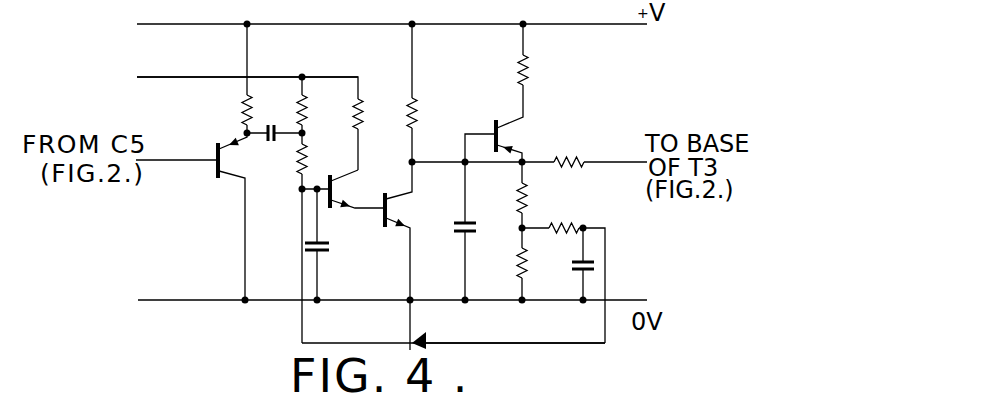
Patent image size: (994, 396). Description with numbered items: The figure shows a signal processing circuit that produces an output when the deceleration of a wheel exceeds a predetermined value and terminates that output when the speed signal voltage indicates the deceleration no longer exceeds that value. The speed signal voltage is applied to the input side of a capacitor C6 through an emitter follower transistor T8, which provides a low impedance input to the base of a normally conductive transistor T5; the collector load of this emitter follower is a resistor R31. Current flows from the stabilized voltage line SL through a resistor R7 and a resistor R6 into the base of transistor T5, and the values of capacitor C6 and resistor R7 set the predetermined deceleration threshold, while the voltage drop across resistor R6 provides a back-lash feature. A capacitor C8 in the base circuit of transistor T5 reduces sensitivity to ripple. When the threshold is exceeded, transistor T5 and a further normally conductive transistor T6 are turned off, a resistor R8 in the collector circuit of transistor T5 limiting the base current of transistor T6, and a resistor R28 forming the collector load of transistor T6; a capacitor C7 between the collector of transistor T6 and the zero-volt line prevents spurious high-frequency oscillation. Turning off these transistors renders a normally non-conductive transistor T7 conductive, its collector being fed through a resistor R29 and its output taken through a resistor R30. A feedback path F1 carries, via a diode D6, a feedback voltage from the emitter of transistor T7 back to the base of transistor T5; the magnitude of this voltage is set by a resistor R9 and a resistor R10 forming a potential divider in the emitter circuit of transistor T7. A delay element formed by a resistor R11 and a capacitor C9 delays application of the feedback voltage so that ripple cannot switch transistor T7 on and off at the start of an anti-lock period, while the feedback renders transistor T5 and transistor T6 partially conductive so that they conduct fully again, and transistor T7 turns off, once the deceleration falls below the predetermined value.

The stabilized voltage line SL is at (150, 77).
The resistor R31 is at (223, 110).
The capacitor C6 is at (272, 125).
The resistor R7 is at (317, 110).
The resistor R6 is at (305, 168).
The resistor R8 is at (375, 133).
The resistor R28 is at (436, 113).
The resistor R29 is at (547, 70).
The resistor R30 is at (562, 160).
The resistor R9 is at (539, 198).
The resistor R11 is at (568, 226).
The resistor R10 is at (498, 263).
The capacitor C8 is at (329, 245).
The capacitor C7 is at (490, 219).
The capacitor C9 is at (574, 264).
The emitter follower transistor T8 is at (239, 161).
The transistor T5 is at (340, 187).
The transistor T6 is at (396, 208).
The transistor T7 is at (500, 133).
The diode D6 is at (420, 332).
The feedback path F1 is at (478, 343).